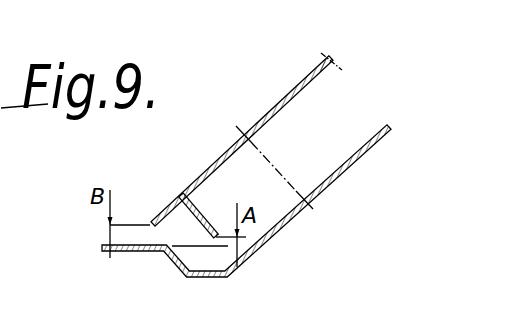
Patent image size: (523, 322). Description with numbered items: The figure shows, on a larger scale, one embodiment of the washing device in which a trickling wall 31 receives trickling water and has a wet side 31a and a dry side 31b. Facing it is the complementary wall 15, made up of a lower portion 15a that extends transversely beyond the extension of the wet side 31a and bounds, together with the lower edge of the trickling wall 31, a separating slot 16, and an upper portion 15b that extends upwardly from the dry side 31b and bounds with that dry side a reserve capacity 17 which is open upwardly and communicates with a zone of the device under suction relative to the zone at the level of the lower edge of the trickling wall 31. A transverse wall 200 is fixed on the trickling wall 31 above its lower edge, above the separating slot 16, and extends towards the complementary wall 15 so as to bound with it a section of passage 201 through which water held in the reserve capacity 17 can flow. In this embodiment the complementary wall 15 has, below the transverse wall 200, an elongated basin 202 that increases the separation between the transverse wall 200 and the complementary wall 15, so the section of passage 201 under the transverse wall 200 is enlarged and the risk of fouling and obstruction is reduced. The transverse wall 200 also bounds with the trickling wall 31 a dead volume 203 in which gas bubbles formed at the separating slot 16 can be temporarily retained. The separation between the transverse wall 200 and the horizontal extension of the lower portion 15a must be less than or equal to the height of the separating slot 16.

The complementary wall 15 is at (170, 269).
The lower portion of the complementary wall 15a is at (120, 252).
The upper portion of the complementary wall 15b is at (286, 224).
The separating slot 16 is at (154, 225).
The reserve capacity 17 is at (318, 163).
The trickling wall 31 is at (305, 84).
The wet side of the trickling wall 31a is at (228, 157).
The dry side of the trickling wall 31b is at (316, 78).
The transverse wall 200 is at (212, 228).
The section of passage 201 is at (227, 254).
The elongated basin 202 is at (221, 258).
The dead volume 203 is at (183, 212).